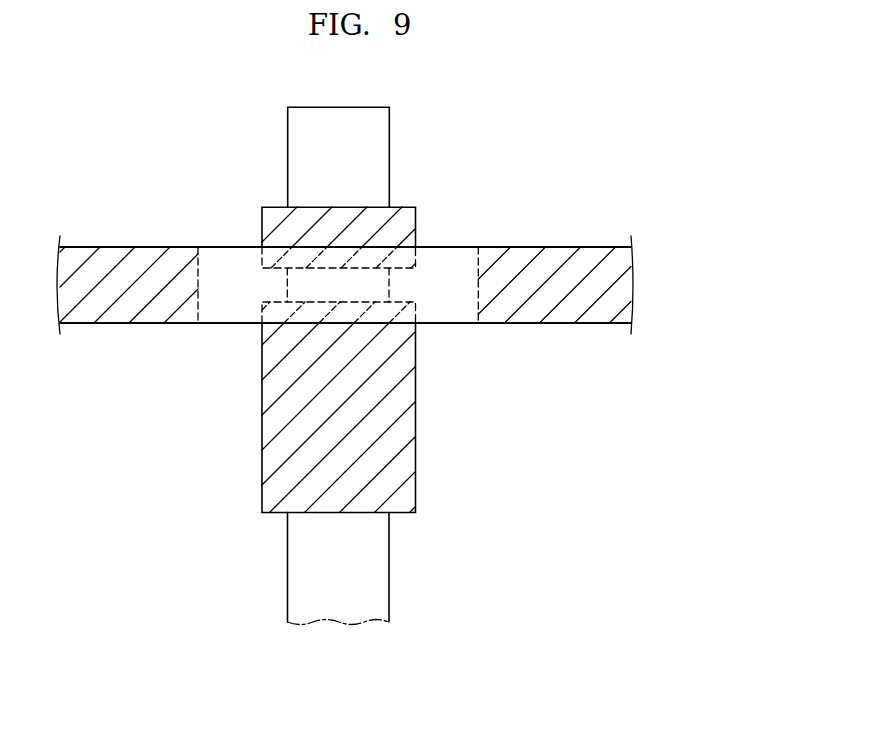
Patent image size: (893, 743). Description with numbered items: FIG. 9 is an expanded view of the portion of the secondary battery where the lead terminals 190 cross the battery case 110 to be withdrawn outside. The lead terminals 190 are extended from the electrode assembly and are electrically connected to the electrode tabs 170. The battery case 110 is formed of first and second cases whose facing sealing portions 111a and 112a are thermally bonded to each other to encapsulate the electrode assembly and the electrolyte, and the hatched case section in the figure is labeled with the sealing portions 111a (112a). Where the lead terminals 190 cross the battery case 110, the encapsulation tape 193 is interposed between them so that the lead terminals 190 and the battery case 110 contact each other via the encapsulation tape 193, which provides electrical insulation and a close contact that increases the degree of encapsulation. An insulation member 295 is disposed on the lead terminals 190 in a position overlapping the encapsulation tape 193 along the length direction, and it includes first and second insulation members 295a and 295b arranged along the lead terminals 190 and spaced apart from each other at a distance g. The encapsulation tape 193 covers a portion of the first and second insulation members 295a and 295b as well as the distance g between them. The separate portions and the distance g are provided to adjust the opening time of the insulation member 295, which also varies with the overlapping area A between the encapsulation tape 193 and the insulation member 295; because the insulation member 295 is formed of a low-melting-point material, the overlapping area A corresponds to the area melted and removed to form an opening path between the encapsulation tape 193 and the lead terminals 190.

The battery case 110 is at (400, 287).
The sealing portion of the first case 111a is at (345, 311).
The sealing portion of the second case 112a is at (547, 311).
The encapsulation tape 193 is at (235, 257).
The lead terminals 190 is at (373, 141).
The electrode tabs 170 is at (377, 567).
The insulation member 295 is at (409, 245).
The first insulation member 295a is at (388, 256).
The second insulation member 295b is at (402, 310).
The distance g is at (447, 270).
The overlapping area A is at (262, 263).